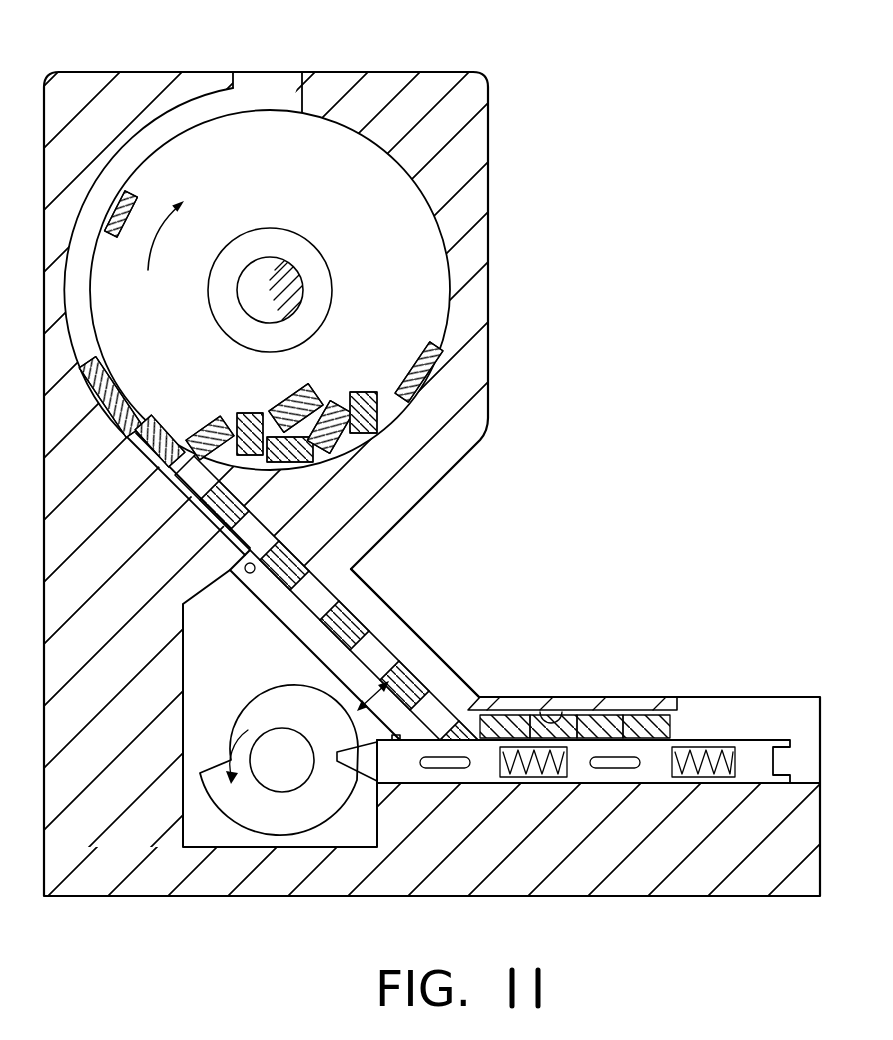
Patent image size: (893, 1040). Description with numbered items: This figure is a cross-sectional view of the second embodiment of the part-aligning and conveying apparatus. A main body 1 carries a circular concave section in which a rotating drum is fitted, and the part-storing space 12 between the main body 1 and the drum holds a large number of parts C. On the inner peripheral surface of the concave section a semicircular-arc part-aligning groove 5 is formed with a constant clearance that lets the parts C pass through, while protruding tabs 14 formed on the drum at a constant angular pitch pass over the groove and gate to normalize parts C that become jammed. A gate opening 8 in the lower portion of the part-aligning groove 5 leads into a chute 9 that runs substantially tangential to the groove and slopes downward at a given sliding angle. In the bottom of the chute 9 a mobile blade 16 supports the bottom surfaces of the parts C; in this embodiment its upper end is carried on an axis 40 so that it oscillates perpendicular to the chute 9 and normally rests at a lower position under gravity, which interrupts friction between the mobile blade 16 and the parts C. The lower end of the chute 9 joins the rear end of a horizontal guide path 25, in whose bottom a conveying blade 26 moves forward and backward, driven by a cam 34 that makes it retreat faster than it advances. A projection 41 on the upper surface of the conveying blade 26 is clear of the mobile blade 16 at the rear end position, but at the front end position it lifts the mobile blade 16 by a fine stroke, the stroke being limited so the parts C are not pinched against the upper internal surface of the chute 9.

The main body 1 is at (490, 243).
The part-aligning groove 5 is at (87, 312).
The gate opening 8 is at (187, 463).
The chute 9 is at (365, 617).
The part-storing space 12 is at (292, 199).
The protruding tabs 14 is at (128, 240).
The mobile blade 16 is at (285, 616).
The horizontal guide path 25 is at (550, 723).
The conveying blade 26 is at (713, 738).
The cam 34 is at (272, 830).
The axis 40 is at (244, 573).
The projection 41 is at (398, 742).
The parts C is at (127, 383).